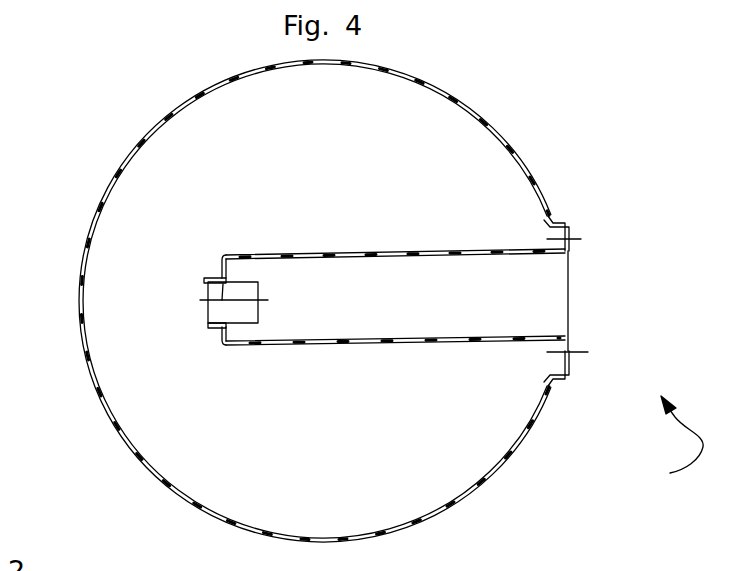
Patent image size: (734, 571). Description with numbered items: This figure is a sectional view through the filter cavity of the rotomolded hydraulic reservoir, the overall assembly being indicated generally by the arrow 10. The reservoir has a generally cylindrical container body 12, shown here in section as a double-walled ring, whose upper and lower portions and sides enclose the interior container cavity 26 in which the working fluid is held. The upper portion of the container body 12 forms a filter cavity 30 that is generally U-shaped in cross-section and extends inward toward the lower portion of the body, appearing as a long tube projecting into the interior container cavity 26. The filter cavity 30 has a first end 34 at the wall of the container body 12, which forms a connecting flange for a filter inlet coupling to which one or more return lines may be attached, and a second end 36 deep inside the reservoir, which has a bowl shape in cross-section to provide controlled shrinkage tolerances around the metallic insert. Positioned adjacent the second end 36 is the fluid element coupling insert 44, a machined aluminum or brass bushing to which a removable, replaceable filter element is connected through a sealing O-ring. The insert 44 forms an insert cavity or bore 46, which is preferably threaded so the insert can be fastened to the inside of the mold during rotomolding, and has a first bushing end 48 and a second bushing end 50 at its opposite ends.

The lamp assembly 10 is at (670, 443).
The container body 12 is at (465, 493).
The interior container cavity 26 is at (167, 420).
The filter cavity 30 is at (520, 272).
The first end 34 is at (570, 236).
The second end 36 is at (227, 328).
The fluid element coupling insert 44 is at (208, 312).
The insert cavity or bore 46 is at (216, 277).
The first bushing end 48 is at (210, 329).
The second bushing end 50 is at (257, 281).